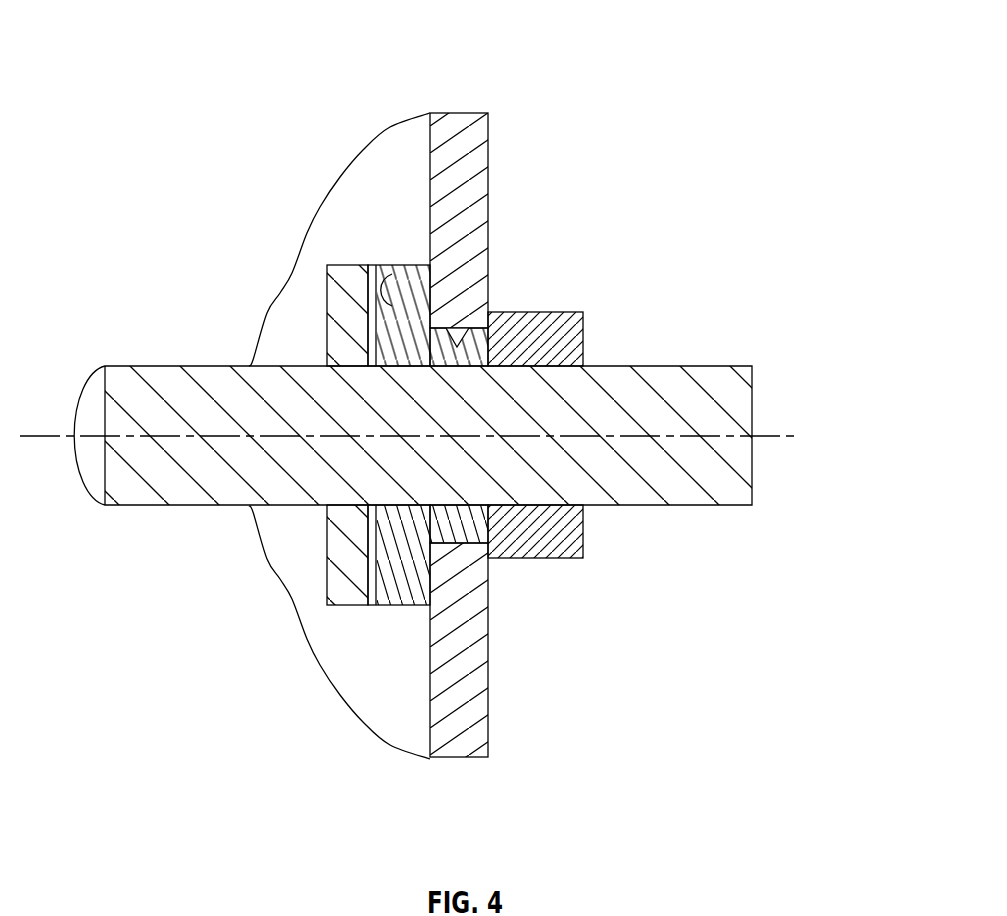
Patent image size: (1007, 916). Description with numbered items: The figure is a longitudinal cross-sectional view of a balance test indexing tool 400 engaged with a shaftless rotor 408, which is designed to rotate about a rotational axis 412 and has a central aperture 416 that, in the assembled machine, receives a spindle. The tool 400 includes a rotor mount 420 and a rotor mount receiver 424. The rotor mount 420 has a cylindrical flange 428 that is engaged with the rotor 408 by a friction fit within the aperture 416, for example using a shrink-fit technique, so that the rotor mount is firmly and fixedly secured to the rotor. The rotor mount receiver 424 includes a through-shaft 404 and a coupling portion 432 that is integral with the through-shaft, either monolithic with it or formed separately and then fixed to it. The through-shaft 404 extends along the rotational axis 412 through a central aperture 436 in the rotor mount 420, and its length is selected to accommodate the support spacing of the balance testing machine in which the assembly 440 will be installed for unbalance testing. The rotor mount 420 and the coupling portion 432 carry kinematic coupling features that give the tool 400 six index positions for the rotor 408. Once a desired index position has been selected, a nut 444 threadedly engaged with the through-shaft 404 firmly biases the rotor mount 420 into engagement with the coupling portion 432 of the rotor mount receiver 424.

The balance test indexing tool 400 is at (323, 253).
The through-shaft 404 is at (703, 506).
The rotor 408 is at (457, 113).
The rotational axis 412 is at (792, 436).
The central aperture 416 is at (458, 345).
The rotor mount 420 is at (407, 607).
The rotor mount receiver 424 is at (263, 310).
The cylindrical flange 428 is at (480, 448).
The coupling portion 432 is at (327, 605).
The central aperture 436 is at (480, 448).
The assembly 440 is at (580, 160).
The nut 444 is at (585, 337).